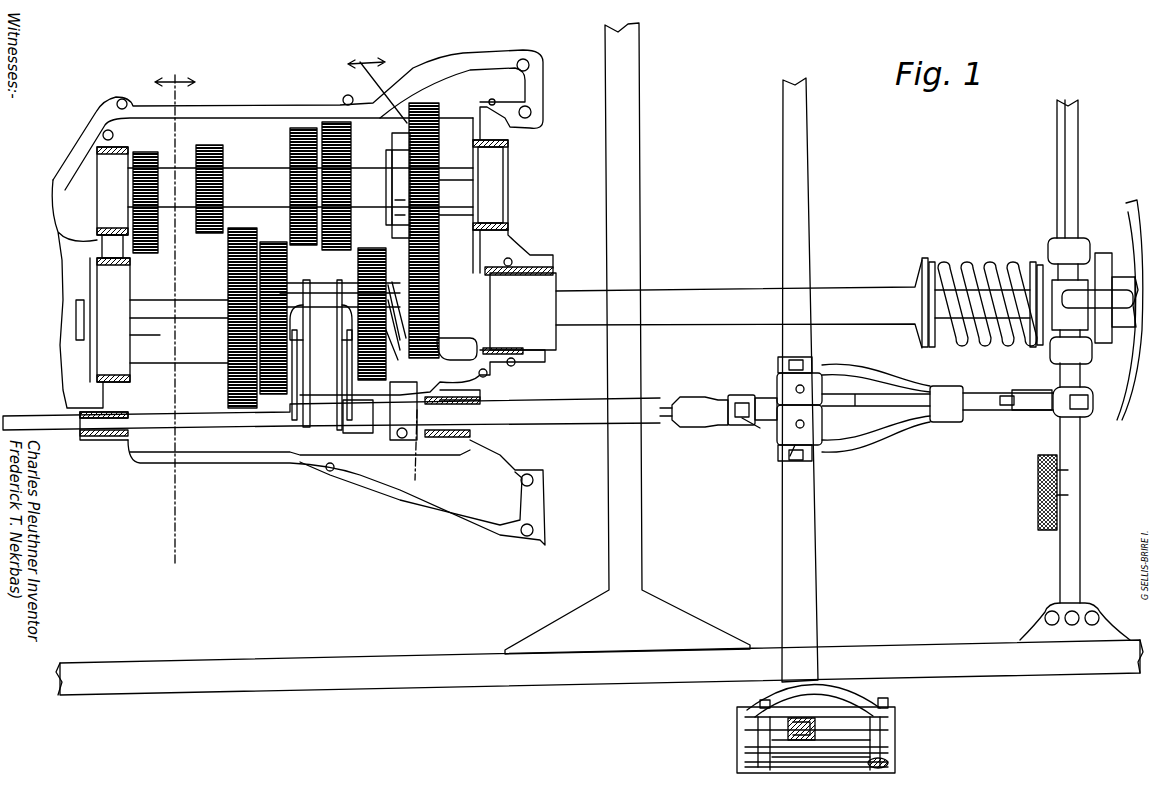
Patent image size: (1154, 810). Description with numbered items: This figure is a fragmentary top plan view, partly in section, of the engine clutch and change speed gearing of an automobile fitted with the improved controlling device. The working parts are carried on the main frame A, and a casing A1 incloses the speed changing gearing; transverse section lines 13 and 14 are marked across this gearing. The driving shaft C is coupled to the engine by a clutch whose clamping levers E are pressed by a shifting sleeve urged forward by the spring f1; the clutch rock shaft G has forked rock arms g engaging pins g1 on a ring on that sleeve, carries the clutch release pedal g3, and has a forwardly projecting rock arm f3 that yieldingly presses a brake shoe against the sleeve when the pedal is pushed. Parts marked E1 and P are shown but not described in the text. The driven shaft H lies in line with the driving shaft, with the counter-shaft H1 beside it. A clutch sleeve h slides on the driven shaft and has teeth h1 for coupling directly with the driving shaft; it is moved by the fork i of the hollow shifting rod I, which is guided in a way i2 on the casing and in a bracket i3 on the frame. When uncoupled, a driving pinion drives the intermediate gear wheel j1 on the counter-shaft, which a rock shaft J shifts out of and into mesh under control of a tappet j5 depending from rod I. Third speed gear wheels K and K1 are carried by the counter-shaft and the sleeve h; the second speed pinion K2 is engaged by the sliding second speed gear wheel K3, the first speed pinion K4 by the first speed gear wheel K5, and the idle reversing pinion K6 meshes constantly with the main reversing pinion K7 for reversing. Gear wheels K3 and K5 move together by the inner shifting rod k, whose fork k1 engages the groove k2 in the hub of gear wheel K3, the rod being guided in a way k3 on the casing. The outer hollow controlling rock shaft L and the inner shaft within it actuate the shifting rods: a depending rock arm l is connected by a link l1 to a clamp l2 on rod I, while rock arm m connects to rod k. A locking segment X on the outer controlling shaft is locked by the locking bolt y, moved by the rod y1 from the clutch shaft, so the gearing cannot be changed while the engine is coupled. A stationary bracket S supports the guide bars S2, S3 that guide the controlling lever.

The main frame A is at (620, 545).
The gear casing A1 is at (165, 490).
The outer hollow controlling rock shaft L is at (790, 108).
The section line 14 is at (185, 564).
The section line 13 is at (405, 500).
The idle reversing pinion K6 is at (145, 240).
The counter-shaft H1 is at (240, 172).
The driven shaft H is at (150, 330).
The main reversing pinion K7 is at (140, 160).
The first speed pinion K4 is at (215, 160).
The second speed pinion K2 is at (297, 130).
The third speed gear wheel K is at (333, 128).
The intermediate gear wheel j1 is at (425, 108).
The first speed gear wheel K5 is at (228, 380).
The second speed gear wheel K3 is at (270, 392).
The third speed gear wheel K1 is at (370, 380).
The clutch sleeve h is at (395, 248).
The clutch teeth h1 is at (420, 225).
The transverse rock shaft J is at (445, 300).
The tappet j5 is at (470, 415).
The inner shifting rod k is at (331, 411).
The guide way k3 is at (100, 440).
The annular groove k2 is at (305, 280).
The fork k1 is at (345, 433).
The fork i is at (347, 350).
The guide way i2 is at (440, 438).
The outer hollow shifting rod I is at (560, 410).
The driving shaft C is at (715, 292).
The spring f1 is at (945, 262).
The clutch rock shaft G is at (1075, 576).
The forked rock arms g is at (1076, 240).
The rock arm f3 is at (1068, 290).
The bracket E1 is at (1105, 345).
The clamping levers E is at (1130, 188).
The locking bolt y is at (965, 390).
The rod y1 is at (1015, 415).
The pins g1 is at (1068, 435).
The clutch release pedal g3 is at (1040, 500).
The locking segment X is at (860, 380).
The depending rock arm l is at (765, 378).
The clamp l2 is at (740, 392).
The link l1 is at (755, 430).
The rock arm m is at (780, 430).
The bracket or hanger i3 is at (660, 395).
The stationary bracket S is at (835, 665).
The inner guide bar S2 is at (840, 710).
The outer guide bar S3 is at (835, 745).
The block P is at (792, 718).